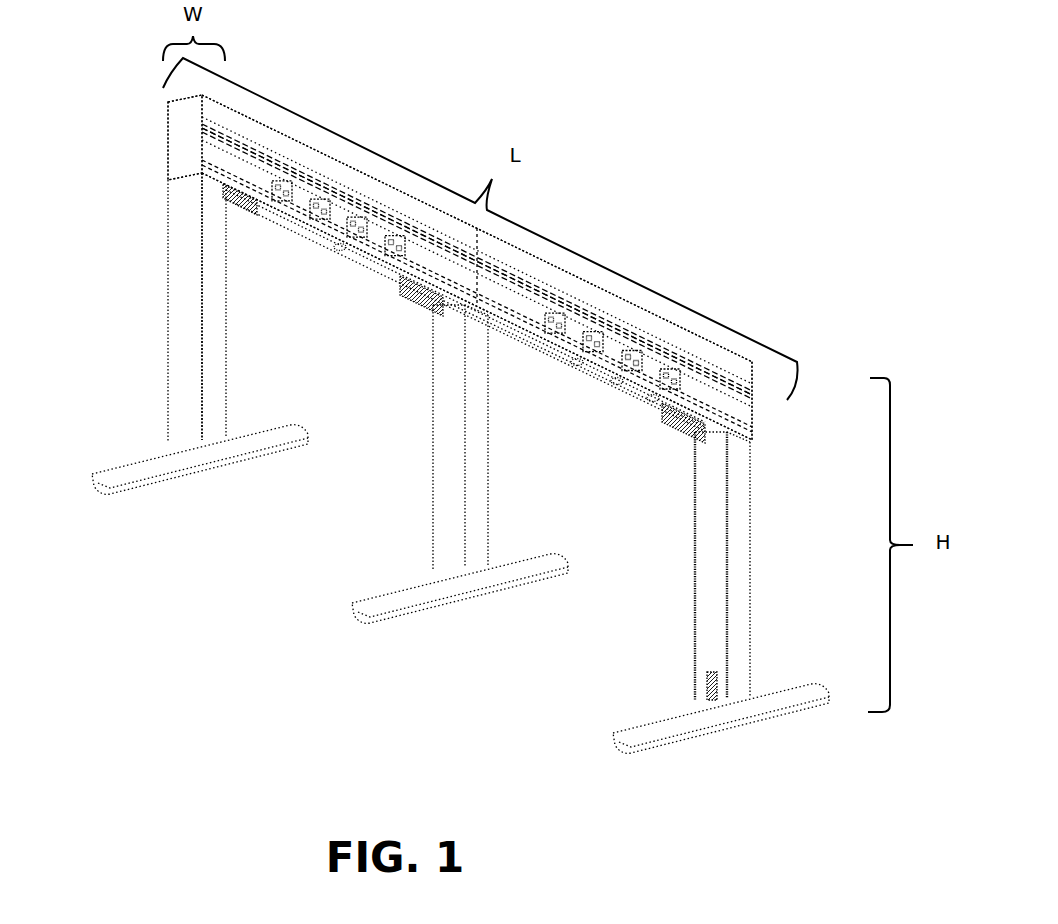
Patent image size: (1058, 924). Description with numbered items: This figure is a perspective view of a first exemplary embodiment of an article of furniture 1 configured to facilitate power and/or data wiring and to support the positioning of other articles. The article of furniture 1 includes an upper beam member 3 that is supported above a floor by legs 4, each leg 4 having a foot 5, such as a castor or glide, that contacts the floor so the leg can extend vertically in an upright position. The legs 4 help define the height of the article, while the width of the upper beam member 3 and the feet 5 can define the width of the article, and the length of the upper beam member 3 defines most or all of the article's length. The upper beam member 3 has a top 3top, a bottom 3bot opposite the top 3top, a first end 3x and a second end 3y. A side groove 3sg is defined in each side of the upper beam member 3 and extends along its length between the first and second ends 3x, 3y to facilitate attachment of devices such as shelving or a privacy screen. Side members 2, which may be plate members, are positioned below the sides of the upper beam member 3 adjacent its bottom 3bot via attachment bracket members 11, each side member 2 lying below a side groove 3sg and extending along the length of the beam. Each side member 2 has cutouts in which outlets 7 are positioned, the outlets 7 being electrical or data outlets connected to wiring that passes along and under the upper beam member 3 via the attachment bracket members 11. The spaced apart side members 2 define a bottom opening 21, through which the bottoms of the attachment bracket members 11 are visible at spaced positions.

The article of furniture 1 is at (122, 385).
The side member 2 is at (435, 273).
The upper beam member 3 is at (616, 291).
The top 3top is at (257, 122).
The bottom 3bot is at (312, 228).
The first end 3x is at (180, 125).
The second end 3y is at (752, 378).
The side groove 3sg is at (502, 263).
The leg 4 is at (180, 343).
The foot 5 is at (151, 472).
The outlet 7 is at (277, 193).
The attachment bracket member 11 is at (680, 452).
The bottom opening 21 is at (586, 412).